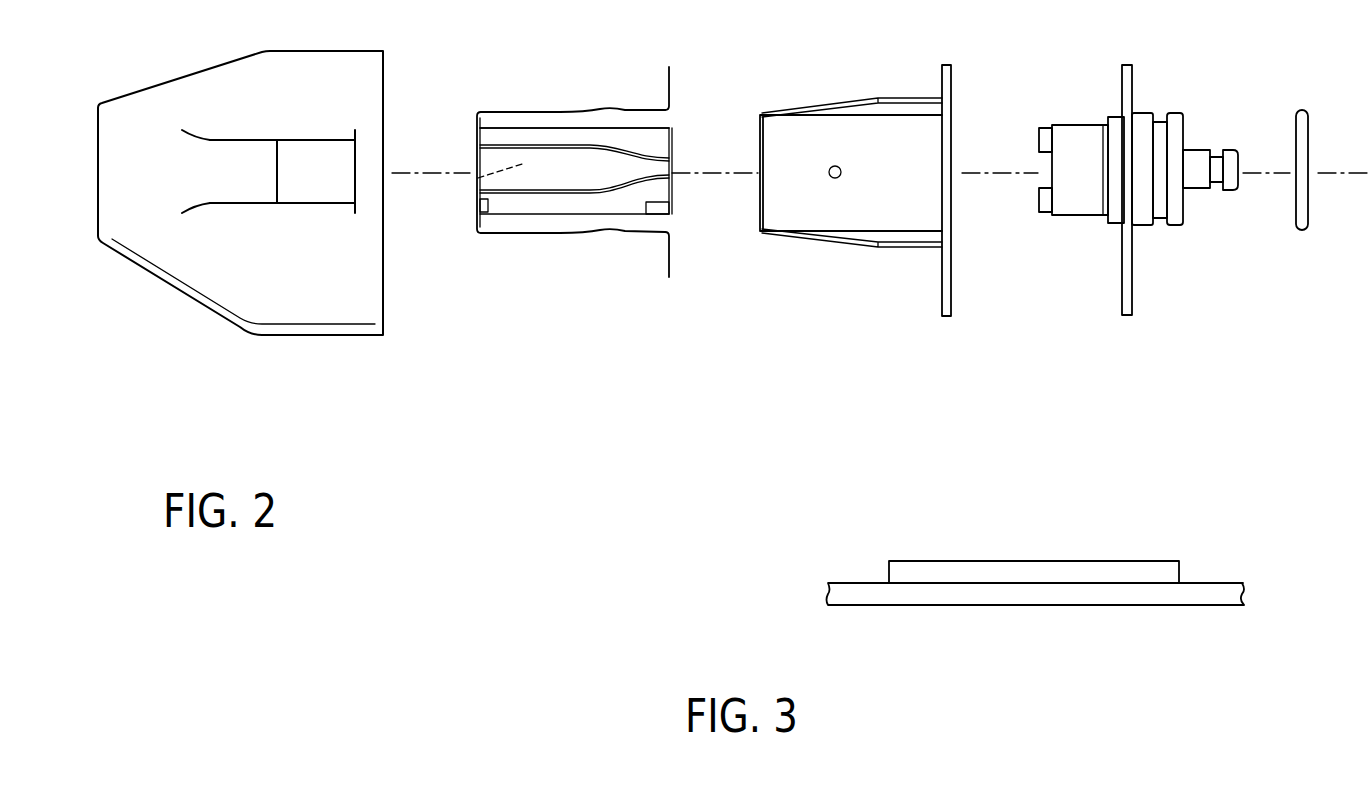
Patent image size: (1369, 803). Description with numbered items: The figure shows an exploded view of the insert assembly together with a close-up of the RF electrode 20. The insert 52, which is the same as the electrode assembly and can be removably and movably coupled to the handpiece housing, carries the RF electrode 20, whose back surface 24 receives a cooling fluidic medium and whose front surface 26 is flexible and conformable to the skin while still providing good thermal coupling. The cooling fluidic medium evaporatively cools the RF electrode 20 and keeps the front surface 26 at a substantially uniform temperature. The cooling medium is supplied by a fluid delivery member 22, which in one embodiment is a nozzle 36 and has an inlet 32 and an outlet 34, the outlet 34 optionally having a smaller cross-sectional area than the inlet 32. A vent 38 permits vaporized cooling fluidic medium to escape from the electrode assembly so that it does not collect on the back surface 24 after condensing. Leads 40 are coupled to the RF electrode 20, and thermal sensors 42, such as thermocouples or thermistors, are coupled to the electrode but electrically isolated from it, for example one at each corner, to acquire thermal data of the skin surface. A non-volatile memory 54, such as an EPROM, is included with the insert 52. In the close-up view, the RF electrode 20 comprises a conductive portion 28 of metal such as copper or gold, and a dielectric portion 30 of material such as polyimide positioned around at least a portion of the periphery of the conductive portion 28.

In FIG. 2, the RF electrode 20 is at (562, 156).
In FIG. 3, the RF electrode 20 is at (872, 606).
In FIG. 2, the fluid delivery member 22 is at (1150, 190).
In FIG. 2, the back surface 24 is at (517, 169).
In FIG. 2, the front surface 26 is at (475, 155).
In FIG. 3, the conductive portion 28 is at (1182, 568).
In FIG. 3, the dielectric portion 30 is at (1230, 582).
In FIG. 2, the inlet 32 is at (1240, 167).
In FIG. 2, the outlet 34 is at (1047, 171).
In FIG. 2, the nozzle 36 is at (953, 196).
In FIG. 2, the vent 38 is at (672, 80).
In FIG. 2, the leads 40 is at (588, 146).
In FIG. 2, the thermal sensors 42 is at (485, 212).
In FIG. 2, the insert 52 is at (168, 290).
In FIG. 2, the non-volatile memory 54 is at (660, 212).